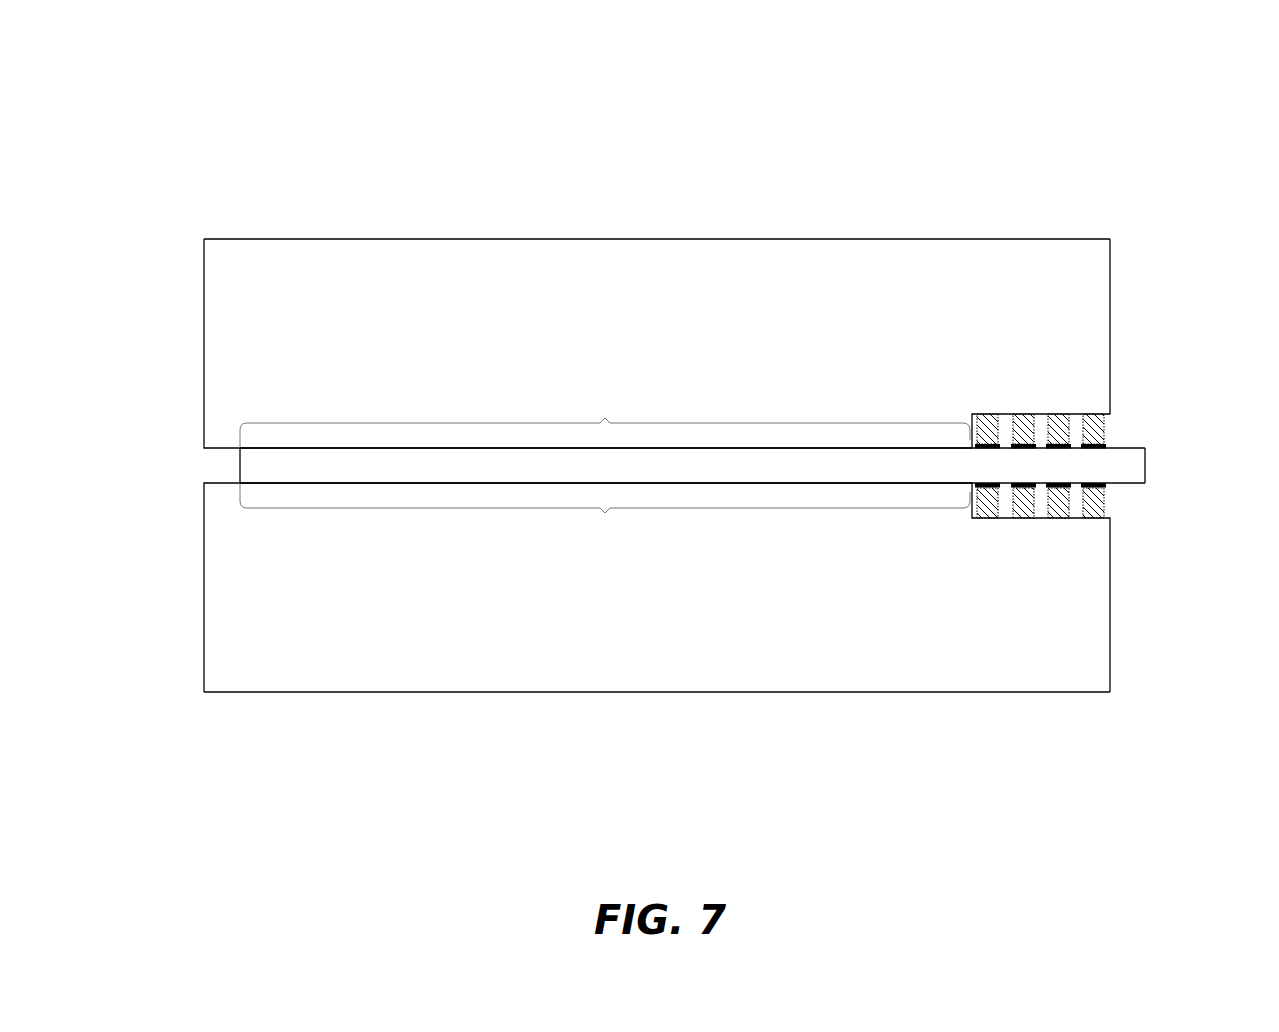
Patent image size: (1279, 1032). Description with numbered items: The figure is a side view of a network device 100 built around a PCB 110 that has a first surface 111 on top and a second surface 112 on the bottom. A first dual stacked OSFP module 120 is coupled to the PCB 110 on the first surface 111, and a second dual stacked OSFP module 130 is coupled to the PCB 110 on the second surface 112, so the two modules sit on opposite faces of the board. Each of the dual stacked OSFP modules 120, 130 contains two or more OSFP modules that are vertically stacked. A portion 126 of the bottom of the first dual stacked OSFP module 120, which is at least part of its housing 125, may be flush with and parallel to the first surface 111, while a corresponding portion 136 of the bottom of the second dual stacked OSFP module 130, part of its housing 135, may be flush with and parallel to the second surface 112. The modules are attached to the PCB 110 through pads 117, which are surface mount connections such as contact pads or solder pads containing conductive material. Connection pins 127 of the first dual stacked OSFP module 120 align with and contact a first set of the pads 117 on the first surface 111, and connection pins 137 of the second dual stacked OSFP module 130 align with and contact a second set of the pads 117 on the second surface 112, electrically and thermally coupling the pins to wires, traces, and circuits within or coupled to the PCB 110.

The network device 100 is at (165, 90).
The PCB 110 is at (240, 465).
The first surface 111 is at (1139, 441).
The second surface 112 is at (1139, 491).
The pads 117 is at (985, 448).
The first dual stacked OSFP module 120 is at (342, 200).
The housing 125 is at (901, 270).
The portion of the bottom of the first dual stacked OSFP module 126 is at (605, 417).
The connection pins 127 is at (1026, 413).
The second dual stacked OSFP module 130 is at (307, 733).
The housing 135 is at (901, 664).
The portion of the bottom of the second dual stacked OSFP module 136 is at (605, 514).
The connection pins 137 is at (990, 520).